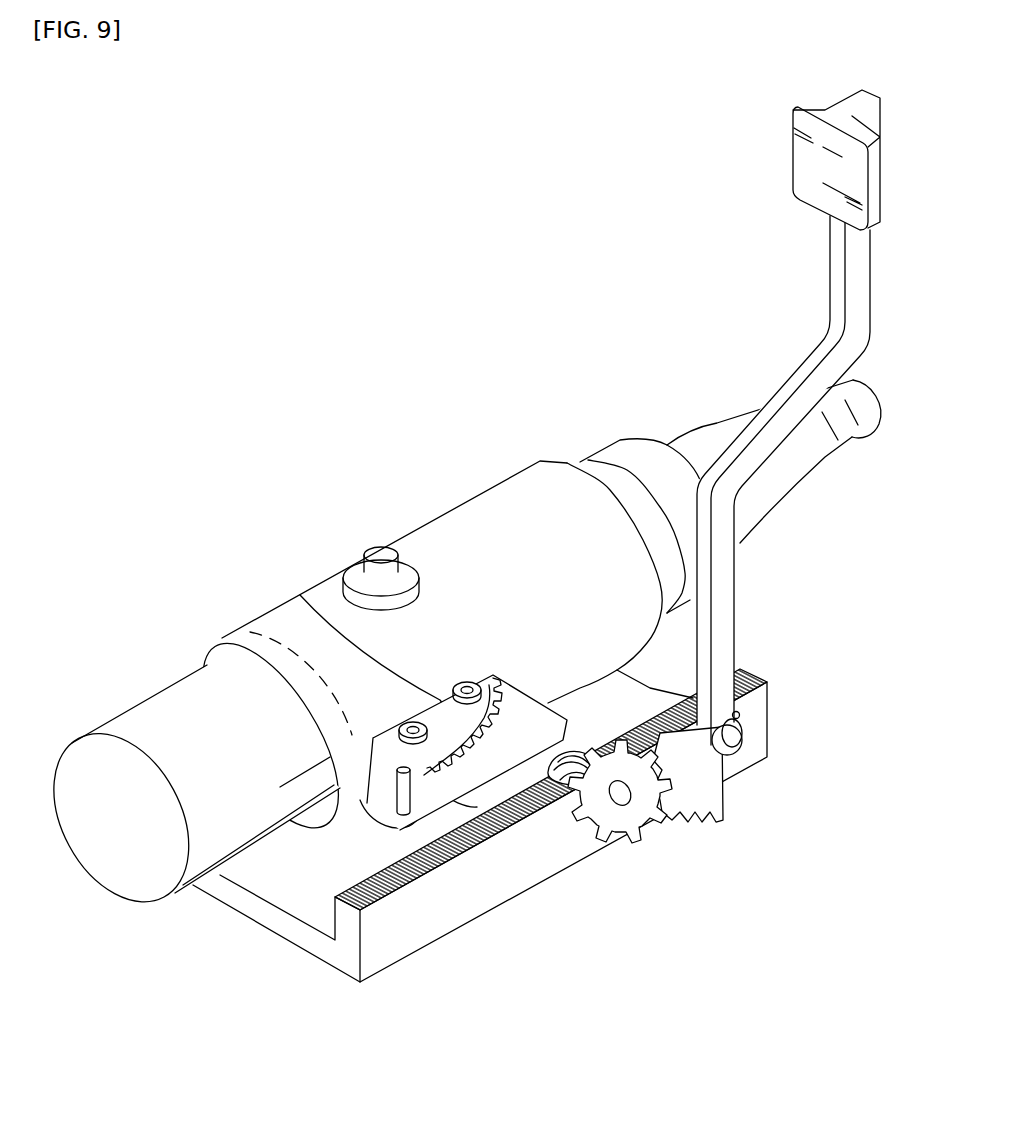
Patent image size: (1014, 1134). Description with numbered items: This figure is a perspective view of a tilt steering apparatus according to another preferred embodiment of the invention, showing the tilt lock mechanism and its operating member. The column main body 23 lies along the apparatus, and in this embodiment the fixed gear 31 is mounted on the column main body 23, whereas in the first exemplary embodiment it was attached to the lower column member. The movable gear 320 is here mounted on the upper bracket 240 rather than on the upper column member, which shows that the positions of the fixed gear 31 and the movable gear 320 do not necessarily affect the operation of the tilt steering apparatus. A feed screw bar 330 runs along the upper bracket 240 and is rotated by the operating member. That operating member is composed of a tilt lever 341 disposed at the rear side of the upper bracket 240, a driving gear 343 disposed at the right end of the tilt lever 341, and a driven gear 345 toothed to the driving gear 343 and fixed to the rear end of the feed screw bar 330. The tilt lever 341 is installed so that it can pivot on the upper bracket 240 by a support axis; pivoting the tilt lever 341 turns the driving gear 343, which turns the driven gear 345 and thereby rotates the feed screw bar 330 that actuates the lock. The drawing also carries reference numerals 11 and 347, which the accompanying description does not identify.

The rotating shaft 11 is at (856, 432).
The column main body 23 is at (460, 525).
The fixed gear 31 is at (300, 595).
The upper bracket 240 is at (420, 918).
The movable gear 320 is at (515, 808).
The feed screw bar 330 is at (525, 800).
The tilt lever 341 is at (858, 268).
The driving gear 343 is at (703, 786).
The driven gear 345 is at (638, 815).
The pin 347 is at (743, 736).